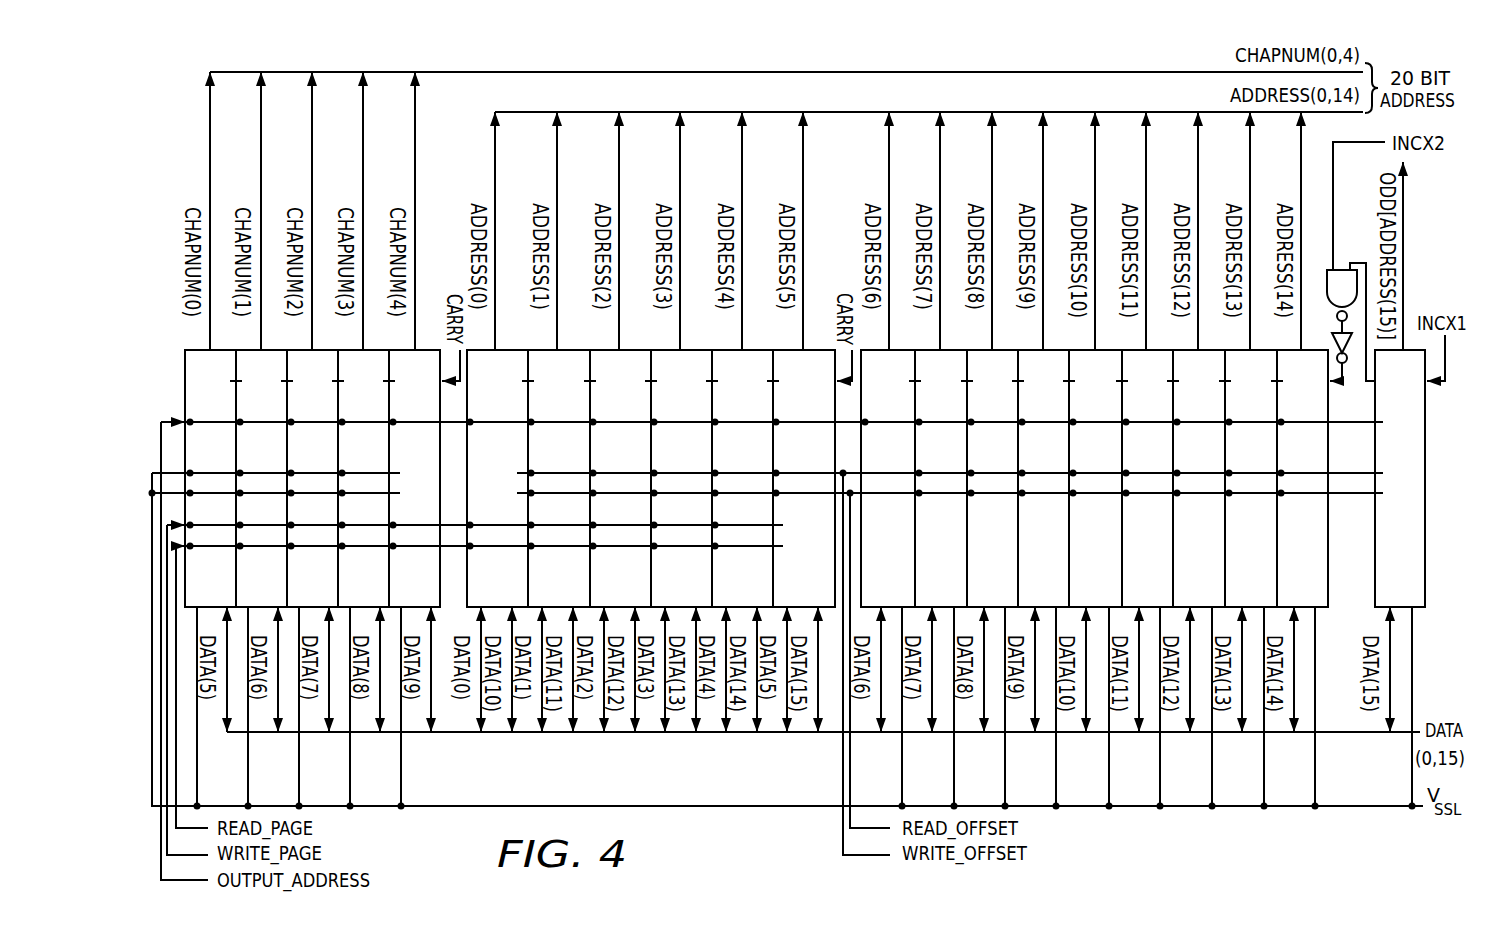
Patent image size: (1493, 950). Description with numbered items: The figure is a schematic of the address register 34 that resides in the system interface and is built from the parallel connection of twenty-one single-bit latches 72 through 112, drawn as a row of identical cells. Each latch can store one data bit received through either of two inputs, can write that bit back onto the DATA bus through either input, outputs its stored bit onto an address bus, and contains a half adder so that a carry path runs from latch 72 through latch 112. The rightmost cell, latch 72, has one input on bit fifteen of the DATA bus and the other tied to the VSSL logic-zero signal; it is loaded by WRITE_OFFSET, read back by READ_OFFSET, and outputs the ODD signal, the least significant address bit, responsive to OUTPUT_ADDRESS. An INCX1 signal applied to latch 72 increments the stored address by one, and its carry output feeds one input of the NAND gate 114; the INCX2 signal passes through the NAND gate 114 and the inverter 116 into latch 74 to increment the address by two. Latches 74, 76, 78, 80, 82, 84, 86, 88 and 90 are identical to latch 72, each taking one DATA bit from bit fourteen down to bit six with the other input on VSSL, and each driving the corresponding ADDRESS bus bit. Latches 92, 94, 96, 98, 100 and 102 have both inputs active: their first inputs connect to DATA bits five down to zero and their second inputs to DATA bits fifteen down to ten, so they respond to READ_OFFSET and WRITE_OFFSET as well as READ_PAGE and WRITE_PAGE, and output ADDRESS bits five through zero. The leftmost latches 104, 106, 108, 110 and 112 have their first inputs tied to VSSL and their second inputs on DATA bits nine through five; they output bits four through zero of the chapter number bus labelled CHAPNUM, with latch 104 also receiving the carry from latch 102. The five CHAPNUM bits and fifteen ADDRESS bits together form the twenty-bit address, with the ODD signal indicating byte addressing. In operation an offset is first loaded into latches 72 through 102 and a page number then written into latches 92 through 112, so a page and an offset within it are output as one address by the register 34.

The address register 34 is at (1358, 840).
The latch 72 is at (1386, 589).
The latch 74 is at (1288, 589).
The latch 76 is at (1237, 589).
The latch 78 is at (1185, 589).
The latch 80 is at (1133, 589).
The latch 82 is at (1081, 589).
The latch 84 is at (1029, 589).
The latch 86 is at (978, 589).
The latch 88 is at (927, 589).
The latch 90 is at (878, 589).
The latch 92 is at (790, 589).
The latch 94 is at (728, 589).
The latch 96 is at (667, 589).
The latch 98 is at (606, 589).
The latch 100 is at (540, 589).
The latch 102 is at (478, 589).
The latch 104 is at (395, 589).
The latch 106 is at (344, 589).
The latch 108 is at (293, 589).
The latch 110 is at (242, 589).
The latch 112 is at (191, 589).
The NAND gate 114 is at (1341, 273).
The inverter 116 is at (1345, 357).